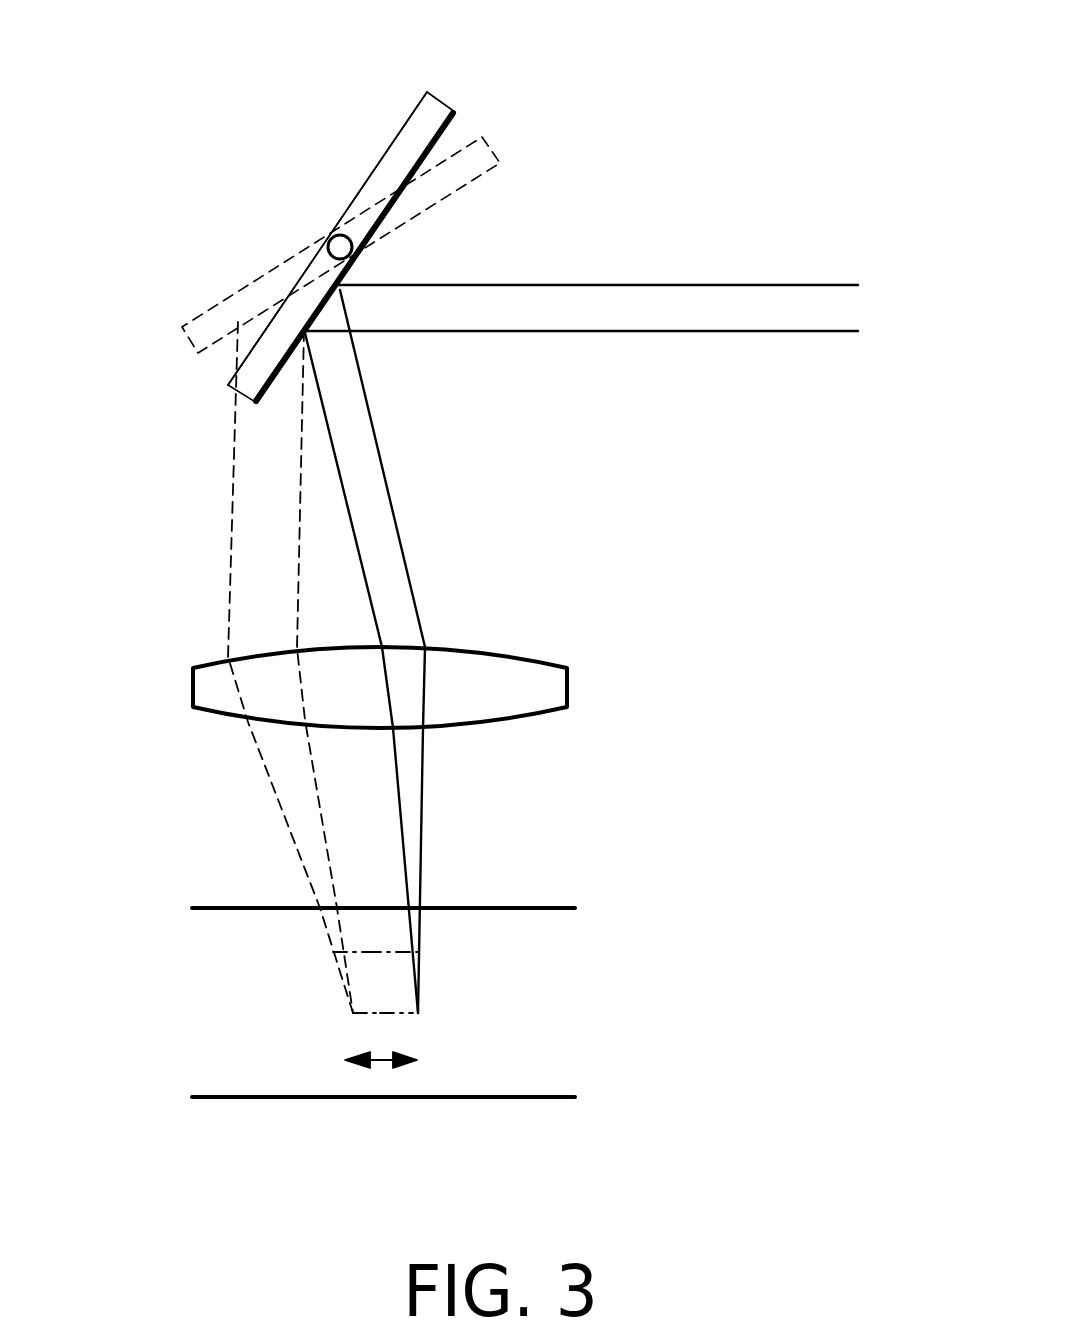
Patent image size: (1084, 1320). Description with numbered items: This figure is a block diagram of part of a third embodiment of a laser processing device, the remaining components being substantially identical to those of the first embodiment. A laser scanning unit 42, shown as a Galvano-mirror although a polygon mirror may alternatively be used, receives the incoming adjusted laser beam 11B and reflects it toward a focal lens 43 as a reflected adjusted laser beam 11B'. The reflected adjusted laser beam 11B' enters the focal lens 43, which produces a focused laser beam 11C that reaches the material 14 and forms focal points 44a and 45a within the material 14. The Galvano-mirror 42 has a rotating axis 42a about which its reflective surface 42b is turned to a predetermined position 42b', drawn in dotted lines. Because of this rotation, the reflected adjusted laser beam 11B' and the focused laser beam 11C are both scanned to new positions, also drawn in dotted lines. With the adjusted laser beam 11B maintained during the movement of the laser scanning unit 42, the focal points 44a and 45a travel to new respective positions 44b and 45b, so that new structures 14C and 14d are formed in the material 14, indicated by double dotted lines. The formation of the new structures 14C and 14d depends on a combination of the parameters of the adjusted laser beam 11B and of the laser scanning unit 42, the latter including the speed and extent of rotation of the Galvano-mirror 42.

The laser scanning unit 42 is at (391, 201).
The rotating axis 42a is at (328, 238).
The reflective surface 42b is at (332, 192).
The predetermined position of reflective surface 42b' is at (400, 245).
The adjusted laser beam 11B is at (582, 265).
The reflected adjusted laser beam 11B' is at (422, 468).
The focal lens 43 is at (510, 658).
The focused laser beam 11C is at (425, 800).
The material 14 is at (477, 995).
The new structure 14C is at (377, 945).
The new structure 14d is at (393, 1015).
The focal point 44a is at (420, 952).
The new position of focal point 44b is at (360, 950).
The focal point 45a is at (413, 1013).
The new position of focal point 45b is at (355, 1013).